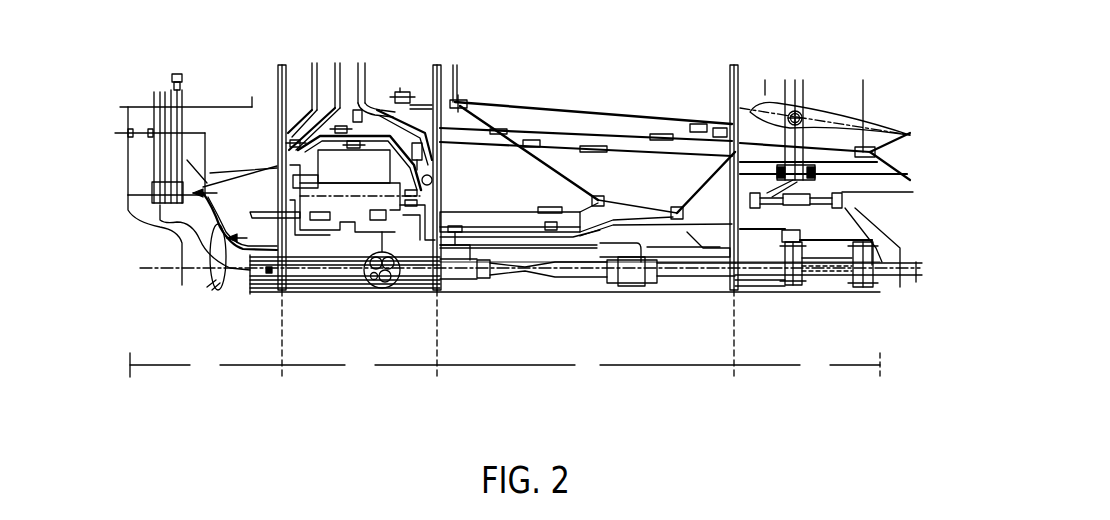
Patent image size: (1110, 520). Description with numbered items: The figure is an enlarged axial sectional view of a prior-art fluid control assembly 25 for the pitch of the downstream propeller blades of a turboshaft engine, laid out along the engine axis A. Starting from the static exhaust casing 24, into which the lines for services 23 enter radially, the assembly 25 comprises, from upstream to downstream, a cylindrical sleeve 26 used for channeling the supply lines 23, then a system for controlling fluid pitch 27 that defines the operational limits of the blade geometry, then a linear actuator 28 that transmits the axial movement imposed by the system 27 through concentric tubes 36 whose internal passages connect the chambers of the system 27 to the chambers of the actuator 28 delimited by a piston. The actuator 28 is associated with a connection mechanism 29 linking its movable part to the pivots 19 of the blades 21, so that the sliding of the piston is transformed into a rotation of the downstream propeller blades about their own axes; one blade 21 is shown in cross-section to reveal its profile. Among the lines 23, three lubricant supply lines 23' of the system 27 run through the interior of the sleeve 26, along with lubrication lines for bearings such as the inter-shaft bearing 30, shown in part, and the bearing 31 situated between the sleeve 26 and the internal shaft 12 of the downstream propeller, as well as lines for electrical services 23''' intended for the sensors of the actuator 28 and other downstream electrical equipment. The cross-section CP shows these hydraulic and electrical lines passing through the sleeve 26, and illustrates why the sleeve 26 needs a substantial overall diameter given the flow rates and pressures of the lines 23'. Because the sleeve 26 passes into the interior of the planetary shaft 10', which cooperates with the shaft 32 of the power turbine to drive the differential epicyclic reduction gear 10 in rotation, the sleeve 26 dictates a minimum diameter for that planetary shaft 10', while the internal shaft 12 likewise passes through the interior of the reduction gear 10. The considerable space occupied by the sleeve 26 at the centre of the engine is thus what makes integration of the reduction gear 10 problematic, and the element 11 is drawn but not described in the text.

The epicyclic reduction gear 10 is at (362, 195).
The planetary shaft 10' is at (289, 211).
The strut 11 is at (453, 165).
The internal shaft 12 is at (468, 265).
The pivot 19 is at (790, 152).
The blade 21 is at (820, 110).
The lines for services 23 is at (196, 198).
The lubricant supply lines 23' is at (406, 324).
The lines for electrical services 23''' is at (383, 300).
The static exhaust casing 24 is at (217, 376).
The assembly 25 is at (700, 392).
The cylindrical sleeve 26 is at (340, 300).
The system for controlling fluid pitch 27 is at (626, 303).
The linear actuator 28 is at (796, 305).
The connection mechanism 29 is at (875, 213).
The inter-shaft bearing 30 is at (398, 97).
The bearing 31 is at (492, 262).
The shaft of the power turbine 32 is at (345, 262).
The concentric tube 36 is at (763, 282).
The axis A is at (916, 284).
The cross-section CP is at (385, 282).